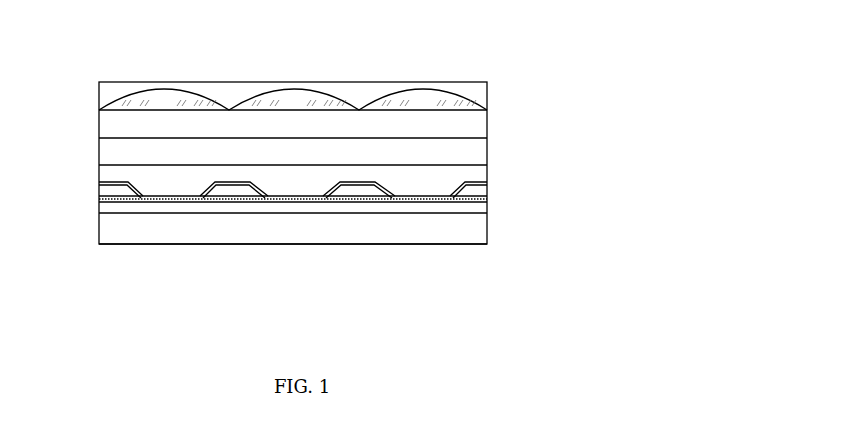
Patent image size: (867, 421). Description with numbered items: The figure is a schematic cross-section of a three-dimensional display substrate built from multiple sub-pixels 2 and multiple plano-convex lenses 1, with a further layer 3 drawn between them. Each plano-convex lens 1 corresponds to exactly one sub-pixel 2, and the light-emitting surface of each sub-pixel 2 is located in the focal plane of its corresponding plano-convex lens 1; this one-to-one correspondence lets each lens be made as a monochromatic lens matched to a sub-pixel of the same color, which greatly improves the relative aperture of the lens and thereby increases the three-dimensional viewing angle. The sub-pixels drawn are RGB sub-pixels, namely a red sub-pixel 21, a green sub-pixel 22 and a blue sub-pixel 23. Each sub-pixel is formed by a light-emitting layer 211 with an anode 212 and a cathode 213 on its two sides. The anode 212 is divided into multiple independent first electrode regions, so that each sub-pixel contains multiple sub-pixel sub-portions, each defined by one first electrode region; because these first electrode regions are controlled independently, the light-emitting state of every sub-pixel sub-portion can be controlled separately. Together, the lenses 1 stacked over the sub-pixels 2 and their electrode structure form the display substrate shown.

The plano-convex lens 1 is at (443, 87).
The sub-pixel 2 is at (265, 262).
The intermediate layer 3 is at (491, 124).
The red sub-pixel 21 is at (265, 246).
The light-emitting layer 211 is at (132, 285).
The anode 212 is at (150, 206).
The cathode 213 is at (99, 187).
The green sub-pixel 22 is at (298, 206).
The blue sub-pixel 23 is at (172, 317).